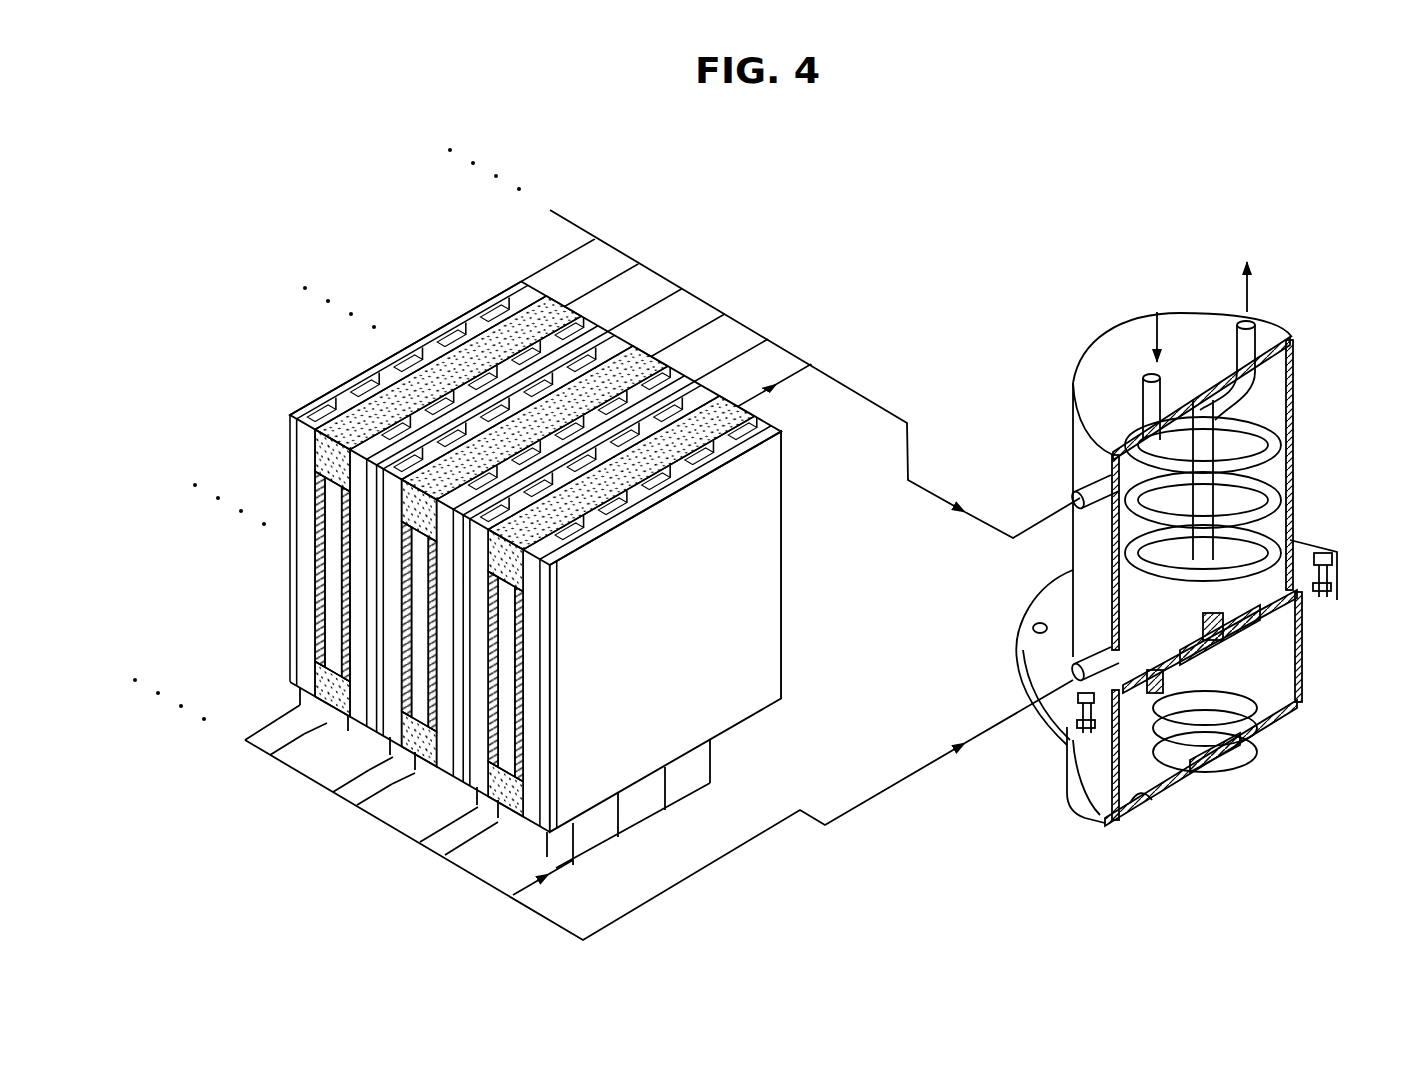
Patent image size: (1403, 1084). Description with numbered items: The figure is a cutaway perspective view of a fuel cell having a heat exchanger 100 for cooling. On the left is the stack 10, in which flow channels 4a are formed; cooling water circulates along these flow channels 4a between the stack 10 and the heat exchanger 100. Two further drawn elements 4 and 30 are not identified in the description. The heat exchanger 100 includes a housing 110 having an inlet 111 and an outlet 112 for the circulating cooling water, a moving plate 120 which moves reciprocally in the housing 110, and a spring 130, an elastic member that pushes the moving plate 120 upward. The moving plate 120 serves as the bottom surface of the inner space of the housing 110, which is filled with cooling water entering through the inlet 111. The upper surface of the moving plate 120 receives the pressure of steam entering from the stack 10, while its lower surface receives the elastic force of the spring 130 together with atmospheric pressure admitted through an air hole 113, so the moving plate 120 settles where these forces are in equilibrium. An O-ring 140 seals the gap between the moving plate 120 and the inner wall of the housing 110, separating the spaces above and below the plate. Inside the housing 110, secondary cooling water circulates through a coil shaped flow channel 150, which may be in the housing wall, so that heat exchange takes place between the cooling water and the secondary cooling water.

The fuel cell stack 4 is at (505, 520).
The flow channels 4a is at (713, 440).
The stack 10 is at (446, 889).
The cooling water circulation line 30 is at (900, 407).
The heat exchanger 100 is at (1170, 522).
The housing 110 is at (1087, 578).
The inlet 111 is at (1097, 470).
The outlet 112 is at (1078, 700).
The air hole 113 is at (1150, 796).
The moving plate 120 is at (1300, 606).
The spring 130 is at (1263, 740).
The O-ring 140 is at (1097, 735).
The coil shaped flow channel 150 is at (1270, 433).